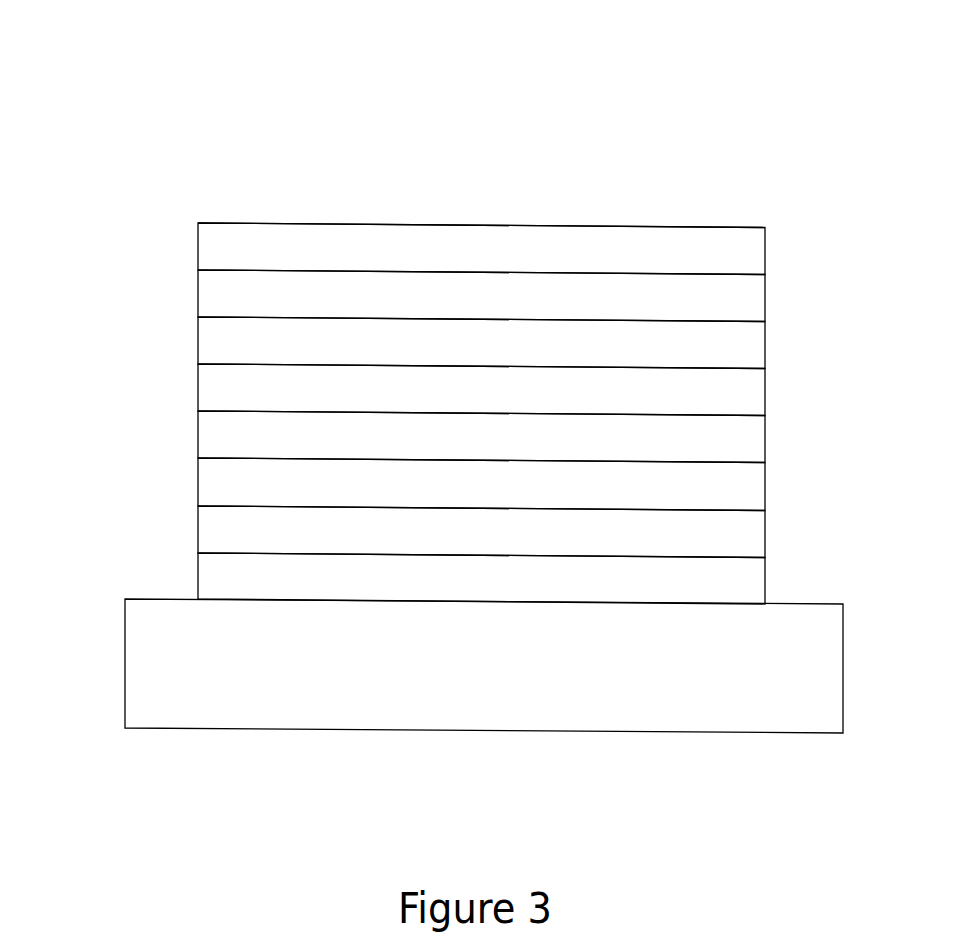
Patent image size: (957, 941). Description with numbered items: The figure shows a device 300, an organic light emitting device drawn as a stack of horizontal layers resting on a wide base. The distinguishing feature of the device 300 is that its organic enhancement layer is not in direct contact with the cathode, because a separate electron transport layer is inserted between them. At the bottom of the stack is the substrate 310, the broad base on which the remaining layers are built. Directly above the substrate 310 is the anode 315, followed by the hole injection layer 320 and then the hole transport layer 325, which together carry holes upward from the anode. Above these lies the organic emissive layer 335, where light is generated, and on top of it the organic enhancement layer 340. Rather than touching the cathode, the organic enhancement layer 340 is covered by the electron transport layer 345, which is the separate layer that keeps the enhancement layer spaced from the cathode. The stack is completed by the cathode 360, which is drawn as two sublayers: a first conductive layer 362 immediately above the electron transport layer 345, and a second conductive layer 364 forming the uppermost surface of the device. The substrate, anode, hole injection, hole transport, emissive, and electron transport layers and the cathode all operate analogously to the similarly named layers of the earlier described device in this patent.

The device 300 is at (364, 146).
The substrate 310 is at (483, 731).
The anode 315 is at (198, 576).
The hole injection layer 320 is at (198, 530).
The hole transport layer 325 is at (198, 482).
The organic emissive layer 335 is at (198, 436).
The organic enhancement layer 340 is at (198, 385).
The electron transport layer 345 is at (198, 340).
The cathode 360 is at (455, 233).
The first conductive layer 362 is at (765, 251).
The second conductive layer 364 is at (483, 224).